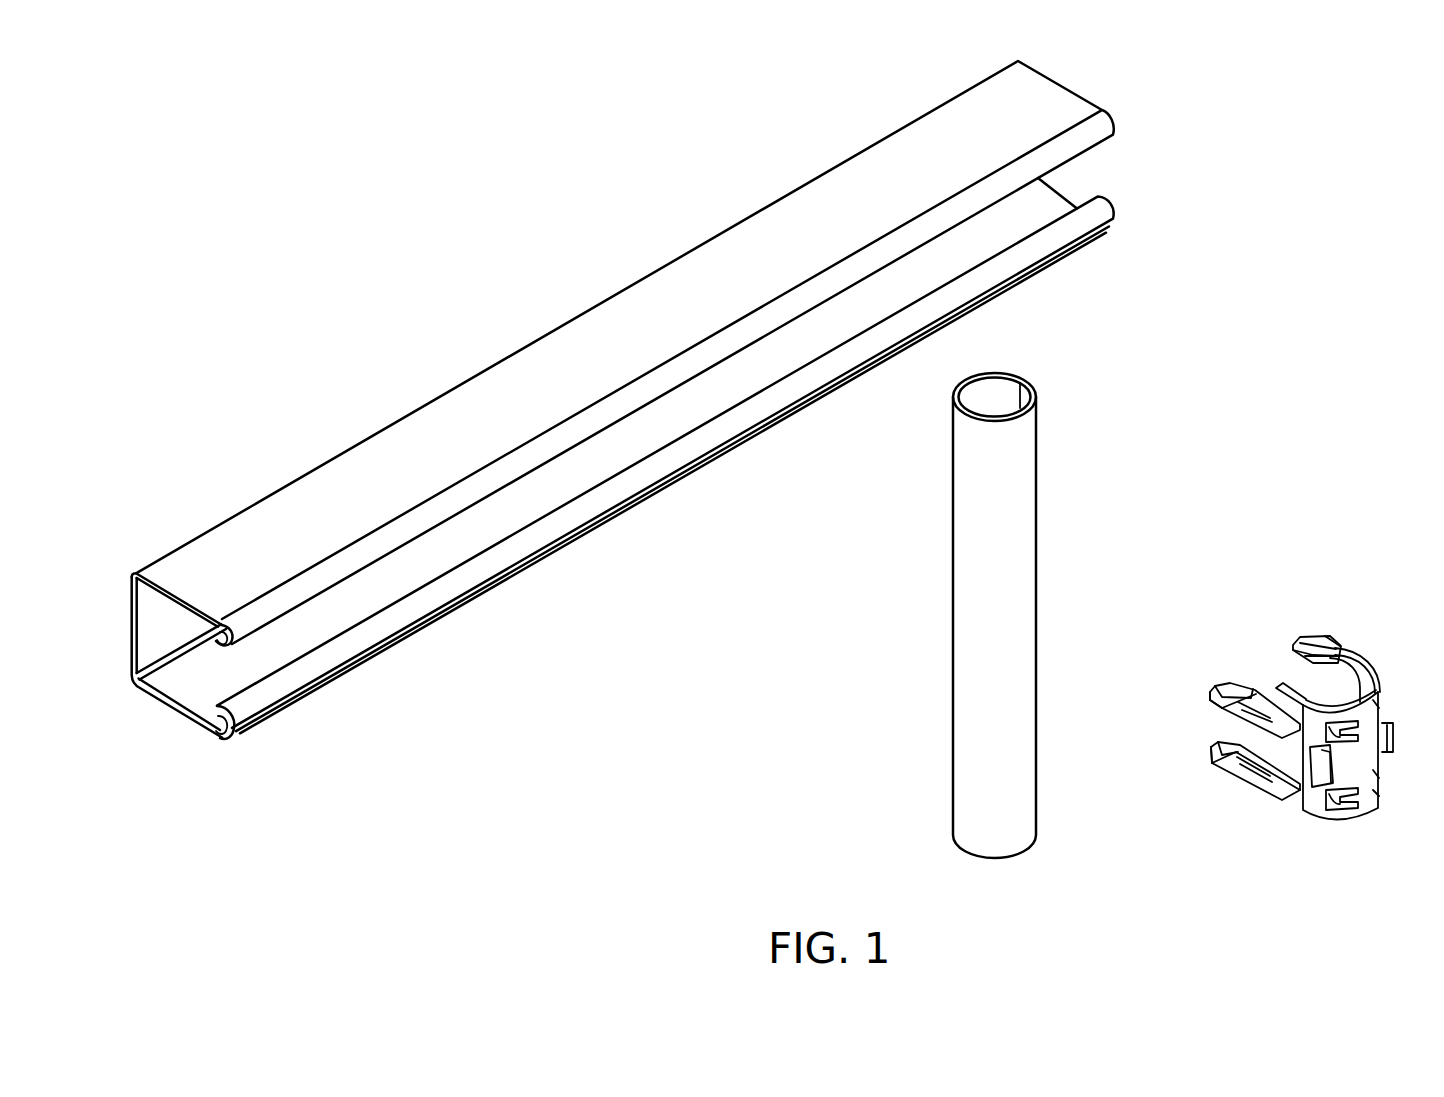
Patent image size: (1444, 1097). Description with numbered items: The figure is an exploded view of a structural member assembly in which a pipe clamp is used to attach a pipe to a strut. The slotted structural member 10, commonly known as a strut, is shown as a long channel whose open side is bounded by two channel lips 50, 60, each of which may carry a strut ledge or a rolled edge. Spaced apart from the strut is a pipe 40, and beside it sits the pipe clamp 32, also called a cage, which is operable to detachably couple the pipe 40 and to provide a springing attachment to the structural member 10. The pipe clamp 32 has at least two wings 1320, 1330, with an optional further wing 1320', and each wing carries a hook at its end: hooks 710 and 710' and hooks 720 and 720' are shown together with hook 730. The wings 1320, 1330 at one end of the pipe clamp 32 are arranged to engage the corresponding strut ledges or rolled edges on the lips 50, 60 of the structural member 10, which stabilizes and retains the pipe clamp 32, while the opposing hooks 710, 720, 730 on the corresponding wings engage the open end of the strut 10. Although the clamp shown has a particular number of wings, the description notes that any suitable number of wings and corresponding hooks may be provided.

The slotted structural member 10 is at (613, 414).
The channel lip 60 is at (243, 617).
The channel lip 50 is at (235, 731).
The pipe 40 is at (953, 616).
The pipe clamp 32 is at (1266, 726).
The wing 1330 is at (1313, 637).
The hook 720 is at (1283, 633).
The hook 720' is at (1372, 626).
The hook 710 is at (1224, 713).
The hook 710' is at (1220, 663).
The wing 1320 is at (1167, 688).
The wing 1320' is at (1175, 760).
The hook 730 is at (1235, 780).